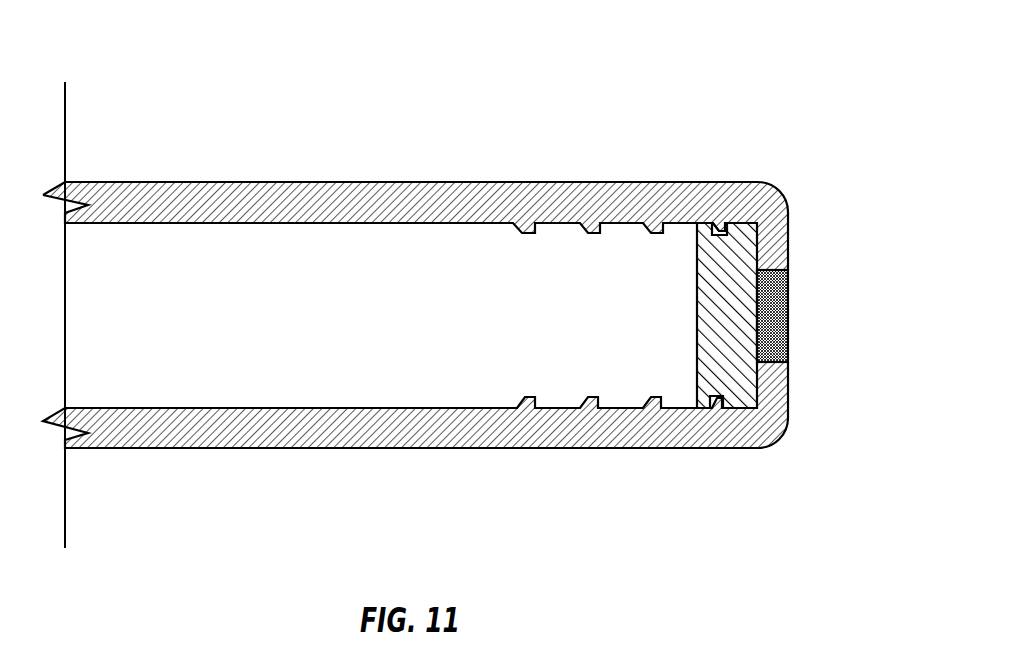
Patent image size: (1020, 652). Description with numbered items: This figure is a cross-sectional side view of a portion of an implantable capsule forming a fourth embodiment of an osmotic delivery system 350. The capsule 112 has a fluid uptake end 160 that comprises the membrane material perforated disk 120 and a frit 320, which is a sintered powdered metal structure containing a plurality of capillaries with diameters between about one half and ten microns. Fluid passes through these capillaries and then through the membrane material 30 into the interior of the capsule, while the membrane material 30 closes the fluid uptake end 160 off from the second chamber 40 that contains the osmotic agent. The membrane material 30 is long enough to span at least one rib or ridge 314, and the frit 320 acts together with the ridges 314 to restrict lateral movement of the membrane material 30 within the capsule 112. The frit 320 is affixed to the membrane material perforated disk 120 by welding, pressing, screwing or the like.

The osmotic delivery system 350 is at (318, 128).
The second chamber 40 is at (228, 242).
The capsule 112 is at (222, 448).
The fluid uptake end 160 is at (788, 222).
The membrane material perforated disk 120 is at (788, 412).
The frit 320 is at (788, 318).
The membrane material 30 is at (696, 324).
The rib or ridge 314 is at (720, 222).